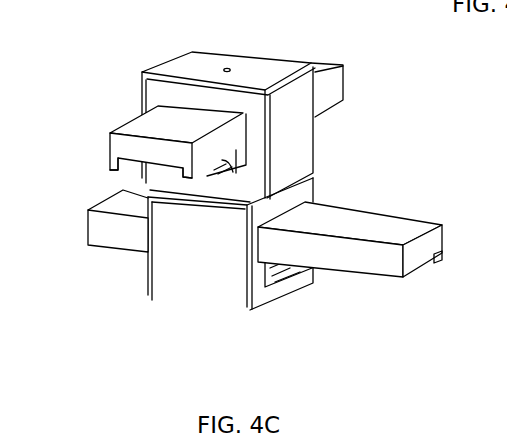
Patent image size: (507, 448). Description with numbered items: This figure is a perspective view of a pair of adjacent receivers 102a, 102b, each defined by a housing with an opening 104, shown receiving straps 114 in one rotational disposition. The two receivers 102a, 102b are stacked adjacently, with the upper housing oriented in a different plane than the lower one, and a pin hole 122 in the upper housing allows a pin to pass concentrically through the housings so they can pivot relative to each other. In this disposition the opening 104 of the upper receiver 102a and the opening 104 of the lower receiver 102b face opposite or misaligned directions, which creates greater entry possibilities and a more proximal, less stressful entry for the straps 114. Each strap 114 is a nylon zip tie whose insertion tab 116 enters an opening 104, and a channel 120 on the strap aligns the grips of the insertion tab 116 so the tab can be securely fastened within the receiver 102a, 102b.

The receiver 102a is at (170, 62).
The receiver 102b is at (198, 312).
The opening 104 is at (230, 163).
The strap 114 is at (343, 82).
The insertion tab 116 is at (123, 140).
The channel 120 is at (130, 157).
The pin hole 122 is at (227, 67).